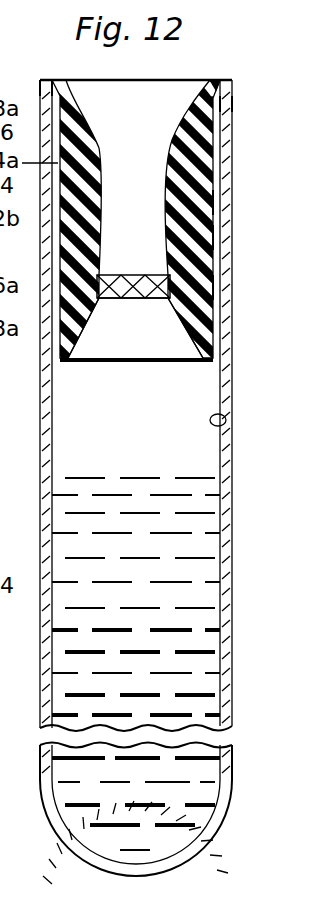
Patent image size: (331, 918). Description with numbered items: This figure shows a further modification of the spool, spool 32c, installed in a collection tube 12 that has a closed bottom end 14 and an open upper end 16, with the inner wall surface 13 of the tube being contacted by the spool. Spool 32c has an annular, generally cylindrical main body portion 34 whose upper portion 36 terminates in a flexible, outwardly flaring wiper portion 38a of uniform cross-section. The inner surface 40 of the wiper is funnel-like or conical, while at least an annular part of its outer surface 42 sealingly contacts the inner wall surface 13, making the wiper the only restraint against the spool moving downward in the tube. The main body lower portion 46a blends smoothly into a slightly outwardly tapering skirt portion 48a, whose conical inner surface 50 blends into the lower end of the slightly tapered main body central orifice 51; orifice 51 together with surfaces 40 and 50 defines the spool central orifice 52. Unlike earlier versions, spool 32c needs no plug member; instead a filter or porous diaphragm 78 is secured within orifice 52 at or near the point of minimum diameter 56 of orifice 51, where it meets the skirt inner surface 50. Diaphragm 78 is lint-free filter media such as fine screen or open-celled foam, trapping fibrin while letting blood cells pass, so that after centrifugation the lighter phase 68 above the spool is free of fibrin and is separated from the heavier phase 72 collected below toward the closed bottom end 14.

The collection tube 12 is at (228, 383).
The inner wall surface 13 is at (228, 419).
The closed bottom end 14 is at (214, 830).
The open upper end 16 is at (40, 88).
The spool 32c is at (207, 236).
The main body portion 34 is at (208, 205).
The upper portion 36 is at (205, 152).
The wiper portion 38a is at (228, 103).
The inner surface 40 is at (206, 90).
The outer surface 42 is at (230, 84).
The main body lower portion 46a is at (206, 288).
The skirt portion 48a is at (212, 346).
The skirt inner surface 50 is at (188, 323).
The main body central orifice 51 is at (166, 158).
The spool central orifice 52 is at (148, 197).
The point of minimum diameter 56 is at (157, 276).
The lighter phase 68 is at (207, 523).
The heavier phase 72 is at (212, 666).
The filter or porous diaphragm 78 is at (150, 300).